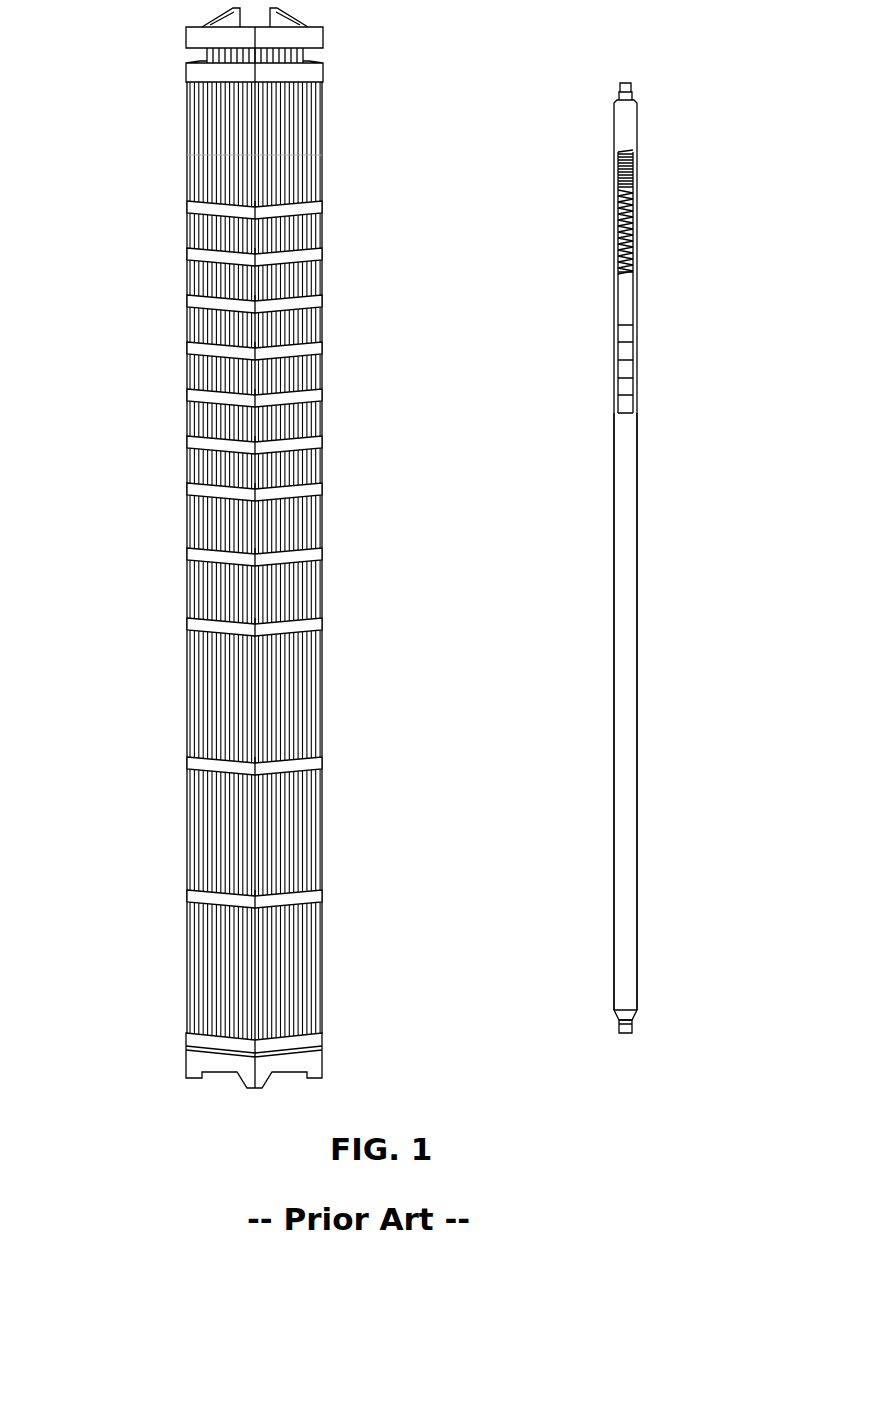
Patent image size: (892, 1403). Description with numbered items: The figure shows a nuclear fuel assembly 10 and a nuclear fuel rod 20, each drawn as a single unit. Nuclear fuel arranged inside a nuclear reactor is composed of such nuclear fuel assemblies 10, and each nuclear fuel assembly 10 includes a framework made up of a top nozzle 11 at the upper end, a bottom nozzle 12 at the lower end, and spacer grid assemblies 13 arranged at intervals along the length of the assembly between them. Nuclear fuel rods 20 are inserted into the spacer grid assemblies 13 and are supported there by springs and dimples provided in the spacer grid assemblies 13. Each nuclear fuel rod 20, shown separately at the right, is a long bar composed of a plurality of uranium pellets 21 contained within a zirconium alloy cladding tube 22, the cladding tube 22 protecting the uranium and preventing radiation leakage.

The nuclear fuel assembly 10 is at (255, 548).
The top nozzle 11 is at (186, 37).
The bottom nozzle 12 is at (193, 1058).
The spacer grid assemblies 13 is at (190, 550).
The nuclear fuel rod 20 is at (549, 558).
The uranium pellets 21 is at (618, 370).
The zirconium alloy cladding tube 22 is at (618, 522).